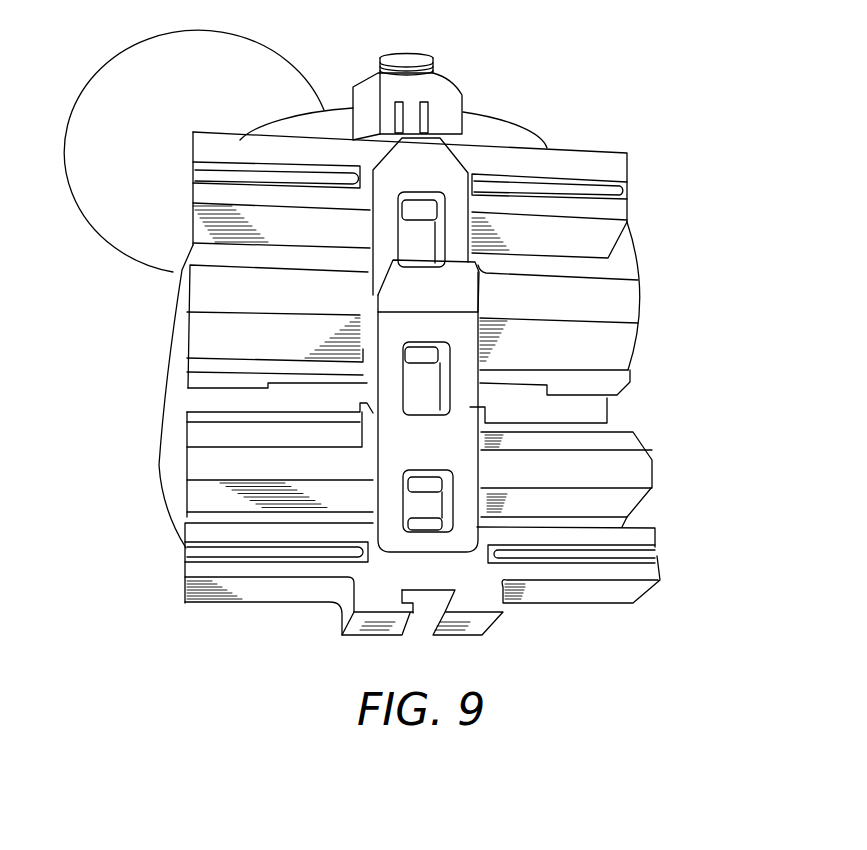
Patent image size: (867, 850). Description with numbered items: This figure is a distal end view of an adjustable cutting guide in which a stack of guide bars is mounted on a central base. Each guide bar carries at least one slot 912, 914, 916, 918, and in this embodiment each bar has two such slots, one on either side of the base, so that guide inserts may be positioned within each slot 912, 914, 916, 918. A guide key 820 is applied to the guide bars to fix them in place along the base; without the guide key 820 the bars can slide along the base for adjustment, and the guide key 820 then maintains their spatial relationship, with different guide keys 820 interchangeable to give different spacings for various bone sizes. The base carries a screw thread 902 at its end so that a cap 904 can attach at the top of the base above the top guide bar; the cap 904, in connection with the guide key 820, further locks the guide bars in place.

The screw thread 902 is at (420, 52).
The cap 904 is at (450, 95).
The slot 912 is at (627, 192).
The slot 914 is at (627, 377).
The slot 916 is at (630, 430).
The slot 918 is at (657, 552).
The guide key 820 is at (468, 530).